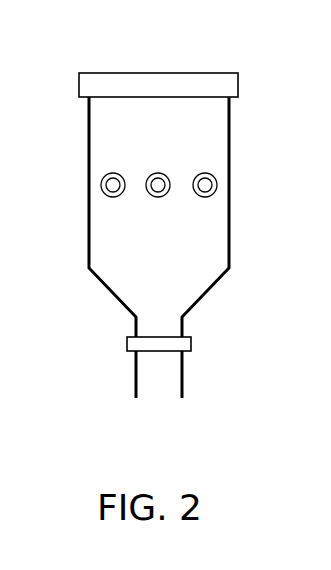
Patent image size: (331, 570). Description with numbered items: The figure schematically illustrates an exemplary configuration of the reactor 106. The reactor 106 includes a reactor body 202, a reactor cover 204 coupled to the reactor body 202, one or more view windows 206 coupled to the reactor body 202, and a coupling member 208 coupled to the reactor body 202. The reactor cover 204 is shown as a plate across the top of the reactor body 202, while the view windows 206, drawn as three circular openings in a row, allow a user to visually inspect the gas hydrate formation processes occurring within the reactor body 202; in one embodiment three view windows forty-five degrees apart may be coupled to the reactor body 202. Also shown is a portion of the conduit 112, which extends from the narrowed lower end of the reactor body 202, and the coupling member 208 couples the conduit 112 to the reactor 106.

The reactor 106 is at (73, 38).
The reactor body 202 is at (230, 134).
The reactor cover 204 is at (194, 73).
The view windows 206 is at (218, 183).
The coupling member 208 is at (188, 341).
The conduit 112 is at (185, 382).